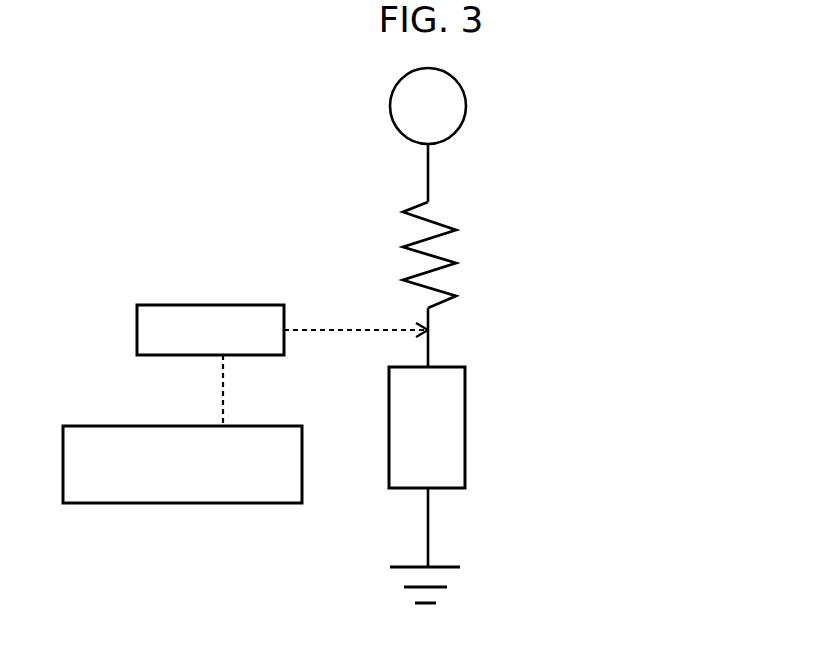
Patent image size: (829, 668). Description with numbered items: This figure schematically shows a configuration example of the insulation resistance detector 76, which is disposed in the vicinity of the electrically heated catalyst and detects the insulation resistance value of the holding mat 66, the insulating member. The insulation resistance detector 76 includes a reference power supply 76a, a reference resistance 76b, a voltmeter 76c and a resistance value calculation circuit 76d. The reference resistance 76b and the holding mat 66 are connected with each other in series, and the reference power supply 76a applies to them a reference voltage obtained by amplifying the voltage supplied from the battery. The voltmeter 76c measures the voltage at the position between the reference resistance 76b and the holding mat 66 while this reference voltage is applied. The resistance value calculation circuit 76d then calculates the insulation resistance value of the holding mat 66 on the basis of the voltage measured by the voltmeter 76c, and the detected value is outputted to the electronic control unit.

The insulation resistance detector 76 is at (588, 112).
The reference power supply 76a is at (466, 115).
The reference resistance 76b is at (447, 290).
The voltmeter 76c is at (198, 305).
The resistance value calculation circuit 76d is at (198, 426).
The holding mat 66 is at (466, 406).